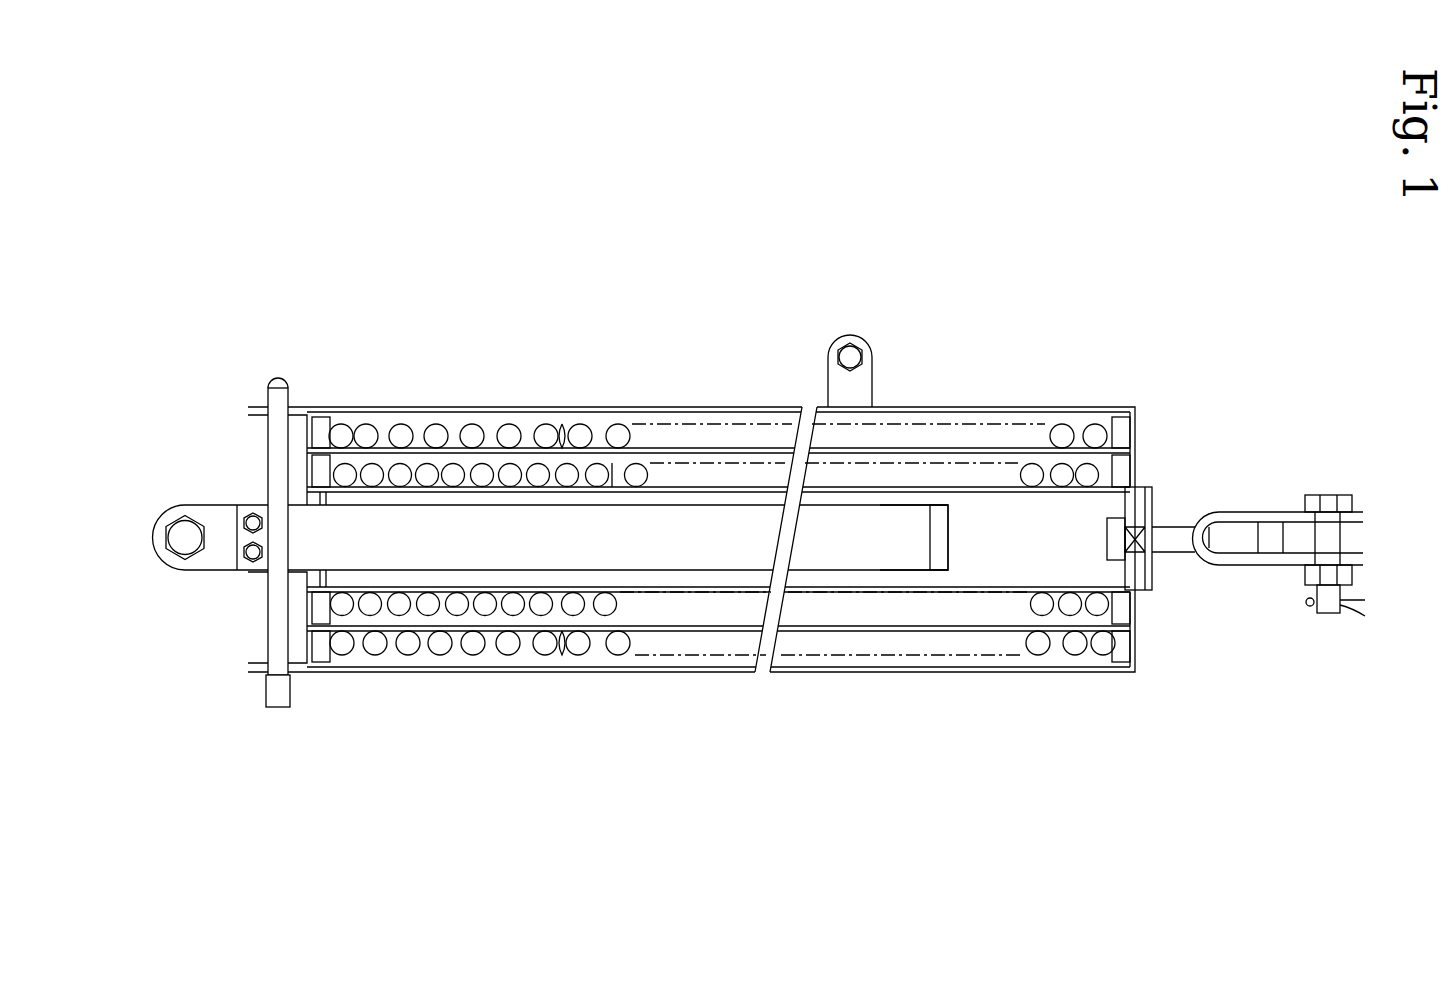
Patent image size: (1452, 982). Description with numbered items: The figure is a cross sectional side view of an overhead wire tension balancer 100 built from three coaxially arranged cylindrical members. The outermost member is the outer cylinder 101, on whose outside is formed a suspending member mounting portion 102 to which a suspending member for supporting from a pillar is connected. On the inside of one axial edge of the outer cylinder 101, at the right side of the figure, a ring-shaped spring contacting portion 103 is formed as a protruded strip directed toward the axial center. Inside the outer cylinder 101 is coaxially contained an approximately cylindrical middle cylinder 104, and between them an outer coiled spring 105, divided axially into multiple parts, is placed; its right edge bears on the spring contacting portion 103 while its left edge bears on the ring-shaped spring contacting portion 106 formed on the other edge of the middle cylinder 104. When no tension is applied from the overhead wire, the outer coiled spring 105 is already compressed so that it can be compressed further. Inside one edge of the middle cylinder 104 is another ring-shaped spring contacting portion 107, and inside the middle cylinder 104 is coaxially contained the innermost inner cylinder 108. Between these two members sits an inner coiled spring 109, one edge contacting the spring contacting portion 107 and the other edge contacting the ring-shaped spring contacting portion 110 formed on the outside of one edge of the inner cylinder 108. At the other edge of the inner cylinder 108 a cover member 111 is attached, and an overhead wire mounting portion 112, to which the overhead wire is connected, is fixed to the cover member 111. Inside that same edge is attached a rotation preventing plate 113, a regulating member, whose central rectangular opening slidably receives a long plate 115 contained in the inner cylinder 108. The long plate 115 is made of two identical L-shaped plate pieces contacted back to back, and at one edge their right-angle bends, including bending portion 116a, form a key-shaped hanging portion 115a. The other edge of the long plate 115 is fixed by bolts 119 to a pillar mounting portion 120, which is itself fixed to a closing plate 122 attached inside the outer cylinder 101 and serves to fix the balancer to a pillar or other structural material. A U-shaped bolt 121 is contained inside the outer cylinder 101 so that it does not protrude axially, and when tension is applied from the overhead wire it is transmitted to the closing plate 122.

The overhead wire tension balancer 100 is at (1085, 296).
The outer cylinder 101 is at (390, 407).
The suspending member mounting portion 102 is at (852, 335).
The spring contacting portion 103 is at (1120, 428).
The middle cylinder 104 is at (600, 450).
The outer coiled spring 105 is at (508, 424).
The spring contacting portion 106 is at (322, 428).
The spring contacting portion 107 is at (1120, 470).
The inner cylinder 108 is at (1020, 594).
The inner coiled spring 109 is at (640, 472).
The spring contacting portion 110 is at (320, 467).
The cover member 111 is at (1137, 565).
The overhead wire mounting portion 112 is at (1252, 574).
The rotation preventing plate 113 is at (325, 577).
The long plate 115 is at (675, 558).
The hanging portion 115a is at (952, 585).
The bending portion 116a is at (938, 537).
The bolt 119 is at (250, 558).
The pillar mounting portion 120 is at (200, 562).
The U-shaped bolt 121 is at (278, 637).
The closing plate 122 is at (295, 492).